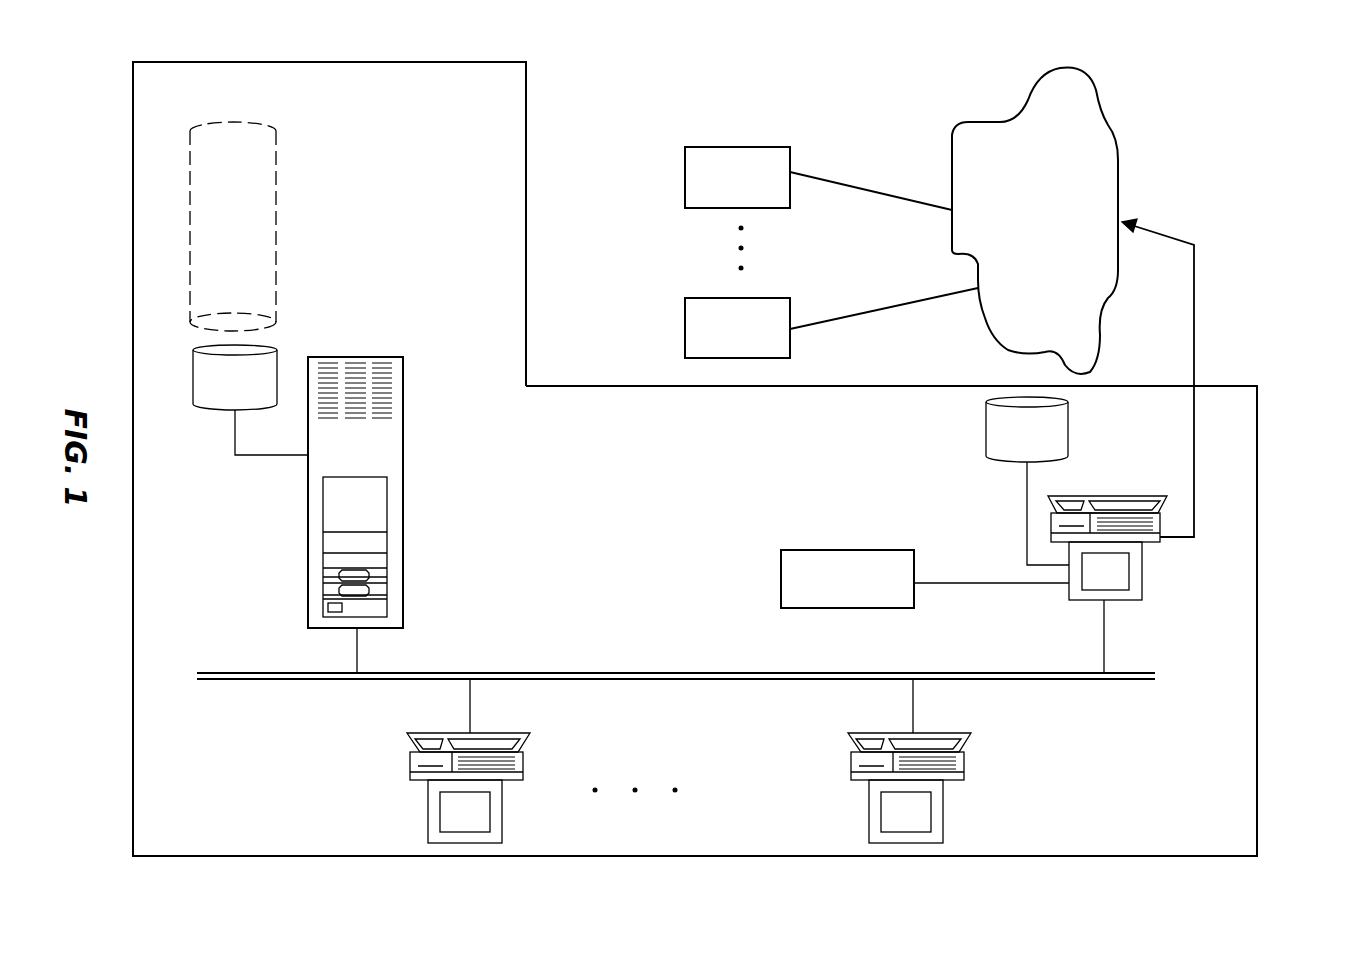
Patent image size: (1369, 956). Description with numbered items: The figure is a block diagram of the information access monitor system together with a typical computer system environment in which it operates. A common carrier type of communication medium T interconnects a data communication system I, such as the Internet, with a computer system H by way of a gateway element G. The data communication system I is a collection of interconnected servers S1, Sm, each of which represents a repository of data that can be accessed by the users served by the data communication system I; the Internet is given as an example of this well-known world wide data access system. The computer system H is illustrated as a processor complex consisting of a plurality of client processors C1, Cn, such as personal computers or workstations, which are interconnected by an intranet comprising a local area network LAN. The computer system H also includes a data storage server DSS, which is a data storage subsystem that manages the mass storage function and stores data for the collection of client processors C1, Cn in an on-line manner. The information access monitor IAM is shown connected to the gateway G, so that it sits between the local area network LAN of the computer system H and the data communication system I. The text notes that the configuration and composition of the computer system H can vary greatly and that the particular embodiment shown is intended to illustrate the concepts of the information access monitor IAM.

The computer system H is at (1257, 638).
The local area network LAN is at (1067, 681).
The data storage server DSS is at (308, 616).
The client processor Cn is at (410, 758).
The client processor C1 is at (851, 763).
The information access monitor IAM is at (781, 600).
The gateway element G is at (1068, 598).
The communication medium T is at (1188, 378).
The data communication system I is at (952, 143).
The server Sm is at (685, 192).
The server S1 is at (685, 348).